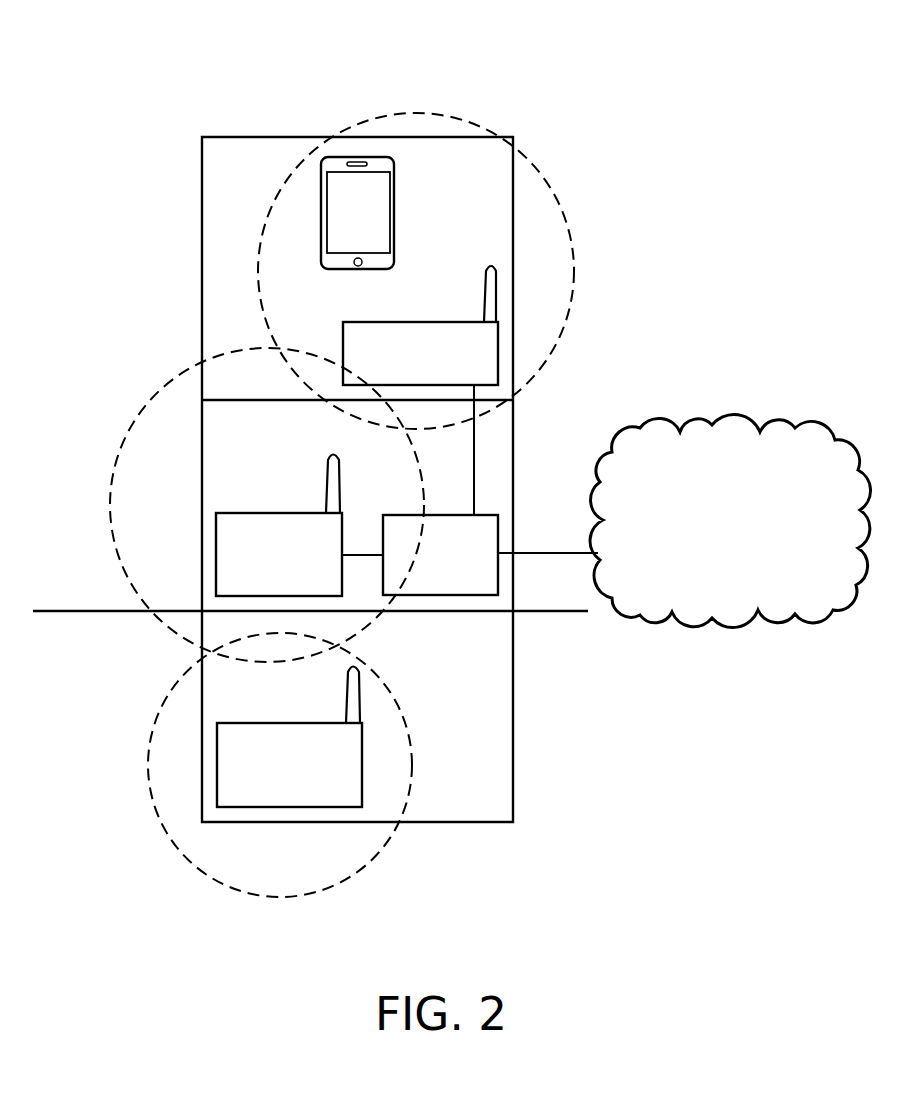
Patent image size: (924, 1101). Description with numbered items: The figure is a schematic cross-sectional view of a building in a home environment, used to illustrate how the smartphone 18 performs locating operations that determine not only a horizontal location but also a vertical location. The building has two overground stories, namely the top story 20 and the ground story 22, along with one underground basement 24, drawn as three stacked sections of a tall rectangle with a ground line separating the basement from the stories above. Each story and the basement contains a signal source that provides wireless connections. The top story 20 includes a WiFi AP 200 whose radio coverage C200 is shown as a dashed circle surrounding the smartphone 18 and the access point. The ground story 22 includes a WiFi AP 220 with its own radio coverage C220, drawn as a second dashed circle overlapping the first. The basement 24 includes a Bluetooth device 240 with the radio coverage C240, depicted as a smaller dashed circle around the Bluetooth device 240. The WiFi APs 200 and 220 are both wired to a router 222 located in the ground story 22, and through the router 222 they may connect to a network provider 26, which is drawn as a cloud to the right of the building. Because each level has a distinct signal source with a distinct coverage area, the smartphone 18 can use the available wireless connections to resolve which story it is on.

The smartphone 18 is at (394, 212).
The top story 20 is at (202, 272).
The ground story 22 is at (202, 507).
The underground basement 24 is at (202, 786).
The network provider 26 is at (730, 418).
The WiFi AP 200 is at (343, 322).
The WiFi AP 220 is at (216, 513).
The router 222 is at (498, 527).
The Bluetooth device 240 is at (217, 723).
The radio coverage C200 is at (408, 112).
The radio coverage C220 is at (136, 417).
The radio coverage C240 is at (157, 710).